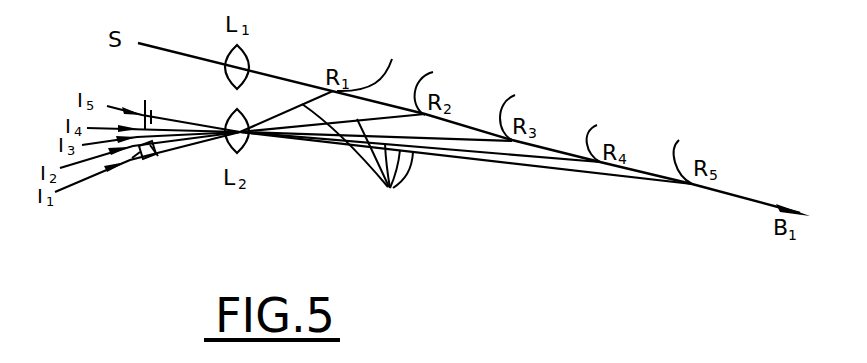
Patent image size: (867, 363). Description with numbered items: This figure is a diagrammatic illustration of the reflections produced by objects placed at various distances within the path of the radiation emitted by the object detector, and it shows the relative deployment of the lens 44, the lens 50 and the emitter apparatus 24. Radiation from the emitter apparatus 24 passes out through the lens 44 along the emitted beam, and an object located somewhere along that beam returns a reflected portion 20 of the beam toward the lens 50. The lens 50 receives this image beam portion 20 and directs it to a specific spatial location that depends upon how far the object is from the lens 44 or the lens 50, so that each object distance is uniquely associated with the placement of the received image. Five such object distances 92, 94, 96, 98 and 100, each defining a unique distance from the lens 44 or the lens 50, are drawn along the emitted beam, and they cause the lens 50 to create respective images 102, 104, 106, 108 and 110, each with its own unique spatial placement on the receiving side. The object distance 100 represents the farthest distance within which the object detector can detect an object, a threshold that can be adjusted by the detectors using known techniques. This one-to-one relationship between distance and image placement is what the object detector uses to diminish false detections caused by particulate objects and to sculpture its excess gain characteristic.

The reflected portion of the beam 20 is at (365, 153).
The emitter apparatus 24 is at (138, 43).
The lens 44 is at (249, 61).
The lens 50 is at (249, 142).
The object distance 92 is at (371, 61).
The object distance 94 is at (440, 87).
The object distance 96 is at (523, 109).
The object distance 98 is at (607, 135).
The object distance 100 is at (700, 155).
The image 102 is at (133, 159).
The image 104 is at (143, 162).
The image 106 is at (156, 153).
The image 108 is at (145, 104).
The image 110 is at (163, 99).